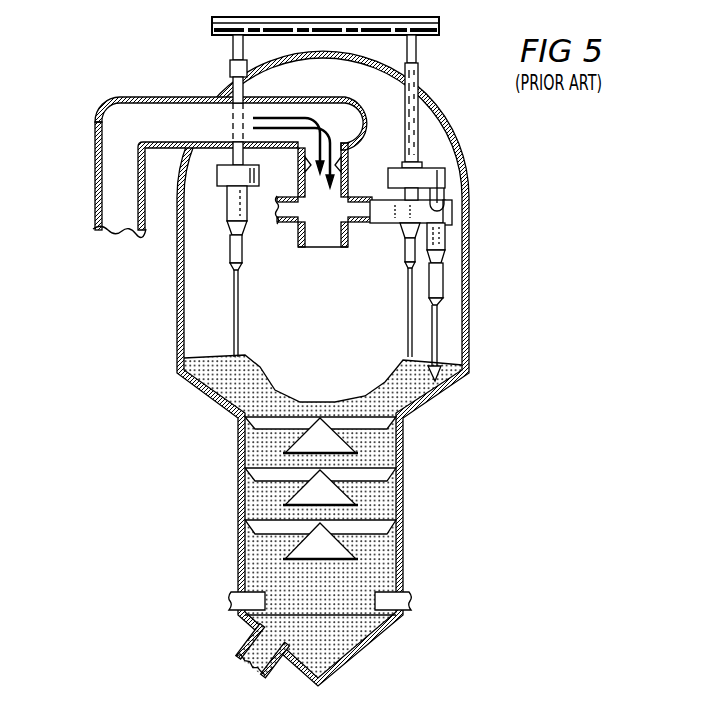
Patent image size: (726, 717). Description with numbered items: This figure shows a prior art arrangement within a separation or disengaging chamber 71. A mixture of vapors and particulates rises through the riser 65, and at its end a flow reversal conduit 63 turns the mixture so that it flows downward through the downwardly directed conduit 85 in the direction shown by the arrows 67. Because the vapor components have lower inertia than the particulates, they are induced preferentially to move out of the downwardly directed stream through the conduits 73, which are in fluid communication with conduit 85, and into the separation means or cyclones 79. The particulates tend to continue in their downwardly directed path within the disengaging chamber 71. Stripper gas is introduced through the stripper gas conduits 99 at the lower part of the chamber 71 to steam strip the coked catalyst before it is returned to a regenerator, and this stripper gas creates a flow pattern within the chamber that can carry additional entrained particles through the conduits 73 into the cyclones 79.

The flow reversal conduit 63 is at (167, 97).
The riser 65 is at (95, 188).
The arrows 67 is at (347, 155).
The disengaging chamber 71 is at (457, 140).
The conduits 73 is at (286, 224).
The separation means 79 is at (441, 236).
The downwardly directed conduit 85 is at (299, 185).
The stripper gas conduits 99 is at (230, 600).